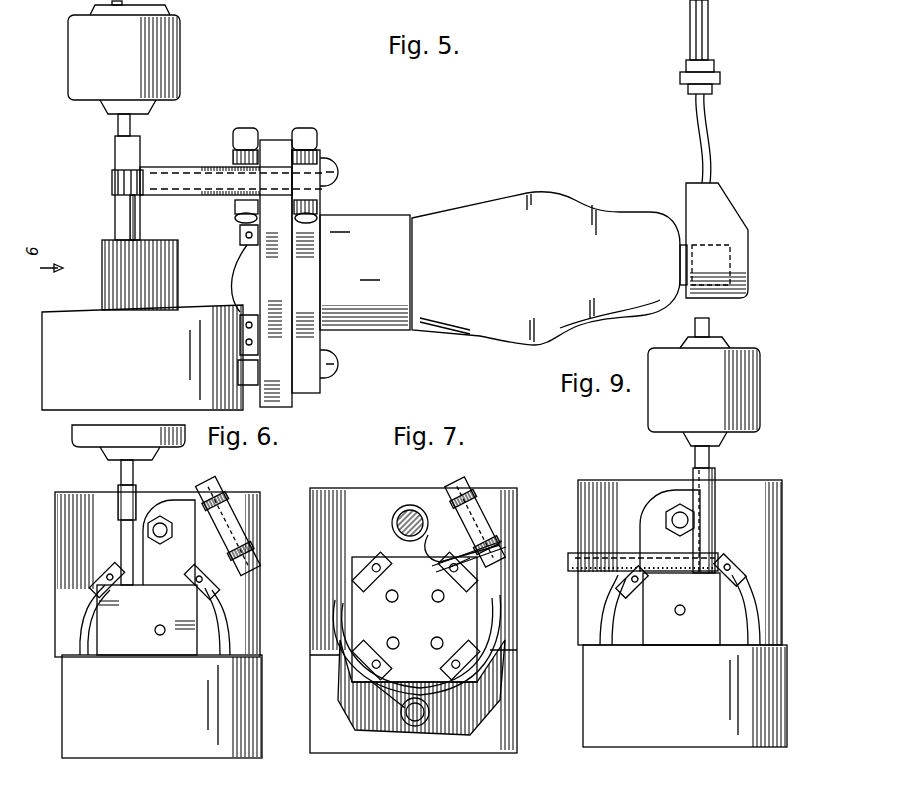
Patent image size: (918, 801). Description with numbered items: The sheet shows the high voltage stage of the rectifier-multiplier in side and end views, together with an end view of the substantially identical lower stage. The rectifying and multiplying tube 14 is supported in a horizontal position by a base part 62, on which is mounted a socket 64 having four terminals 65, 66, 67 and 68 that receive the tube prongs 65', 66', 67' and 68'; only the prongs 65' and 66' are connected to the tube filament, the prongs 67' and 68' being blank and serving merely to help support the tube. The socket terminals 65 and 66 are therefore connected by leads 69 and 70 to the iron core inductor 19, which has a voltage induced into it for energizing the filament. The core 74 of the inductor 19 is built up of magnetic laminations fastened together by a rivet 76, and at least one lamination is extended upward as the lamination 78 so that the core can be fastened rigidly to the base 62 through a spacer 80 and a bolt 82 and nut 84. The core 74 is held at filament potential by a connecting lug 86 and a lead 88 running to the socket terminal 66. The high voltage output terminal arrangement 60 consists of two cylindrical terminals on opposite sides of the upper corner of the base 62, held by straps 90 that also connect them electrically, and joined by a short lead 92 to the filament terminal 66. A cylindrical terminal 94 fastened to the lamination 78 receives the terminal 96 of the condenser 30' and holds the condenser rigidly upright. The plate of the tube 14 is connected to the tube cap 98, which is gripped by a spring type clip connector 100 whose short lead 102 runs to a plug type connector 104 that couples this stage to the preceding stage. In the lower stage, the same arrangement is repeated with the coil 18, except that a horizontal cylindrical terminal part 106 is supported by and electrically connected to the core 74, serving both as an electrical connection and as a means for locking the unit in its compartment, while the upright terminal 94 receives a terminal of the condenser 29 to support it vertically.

In FIG. 5, the rectifying and multiplying tube 14 is at (532, 205).
In FIG. 9, the coil 18 is at (656, 742).
In FIG. 5, the iron core inductor 19 is at (54, 412).
In FIG. 6, the iron core inductor 19 is at (180, 758).
In FIG. 7, the iron core inductor 19 is at (372, 754).
In FIG. 9, the condenser 29 is at (730, 360).
In FIG. 5, the condenser 30' is at (142, 57).
In FIG. 6, the condenser 30' is at (128, 452).
In FIG. 5, the high voltage output terminal arrangement 60 is at (304, 130).
In FIG. 6, the high voltage output terminal arrangement 60 is at (228, 492).
In FIG. 7, the high voltage output terminal arrangement 60 is at (470, 486).
In FIG. 5, the base part 62 is at (292, 407).
In FIG. 9, the base part 62 is at (772, 484).
In FIG. 6, the base part 62 is at (262, 504).
In FIG. 7, the base part 62 is at (512, 492).
In FIG. 5, the socket 64 is at (322, 342).
In FIG. 7, the socket 64 is at (342, 664).
In FIG. 9, the socket terminal 65 is at (632, 597).
In FIG. 6, the socket terminal 65 is at (103, 574).
In FIG. 7, the socket terminal 65 is at (371, 547).
In FIG. 7, the tube prong 65' is at (386, 577).
In FIG. 9, the socket terminal 66 is at (740, 558).
In FIG. 6, the socket terminal 66 is at (201, 593).
In FIG. 7, the socket terminal 66 is at (457, 610).
In FIG. 7, the tube prong 66' is at (440, 577).
In FIG. 7, the socket terminal 67 is at (460, 674).
In FIG. 7, the tube prong 67' is at (437, 630).
In FIG. 7, the socket terminal 68 is at (378, 674).
In FIG. 7, the tube prong 68' is at (404, 630).
In FIG. 9, the lead 69 is at (602, 632).
In FIG. 6, the lead 69 is at (76, 632).
In FIG. 7, the lead 69 is at (334, 638).
In FIG. 9, the lead 70 is at (772, 624).
In FIG. 6, the lead 70 is at (248, 620).
In FIG. 7, the lead 70 is at (504, 632).
In FIG. 5, the core 74 is at (170, 282).
In FIG. 9, the core 74 is at (714, 631).
In FIG. 6, the core 74 is at (136, 650).
In FIG. 7, the core 74 is at (414, 619).
In FIG. 6, the rivet 76 is at (166, 632).
In FIG. 5, the extended core lamination 78 is at (144, 212).
In FIG. 6, the extended core lamination 78 is at (184, 572).
In FIG. 5, the spacer 80 is at (212, 196).
In FIG. 7, the spacer 80 is at (428, 534).
In FIG. 5, the bolt 82 is at (334, 170).
In FIG. 6, the bolt 82 is at (168, 522).
In FIG. 7, the bolt 82 is at (410, 506).
In FIG. 5, the nut 84 is at (140, 170).
In FIG. 9, the nut 84 is at (674, 508).
In FIG. 6, the nut 84 is at (162, 516).
In FIG. 7, the connecting lug 86 is at (438, 530).
In FIG. 7, the lead 88 is at (444, 548).
In FIG. 5, the straps 90 is at (318, 150).
In FIG. 7, the straps 90 is at (482, 506).
In FIG. 7, the short lead 92 is at (459, 552).
In FIG. 5, the terminal 94 is at (116, 152).
In FIG. 9, the terminal 94 is at (716, 496).
In FIG. 6, the terminal 94 is at (132, 555).
In FIG. 5, the condenser terminal 96 is at (118, 128).
In FIG. 6, the condenser terminal 96 is at (120, 476).
In FIG. 5, the tube cap 98 is at (673, 289).
In FIG. 5, the spring type clip connector 100 is at (732, 218).
In FIG. 5, the short lead 102 is at (712, 136).
In FIG. 5, the plug type connector 104 is at (722, 66).
In FIG. 9, the horizontal cylindrical terminal part 106 is at (580, 572).